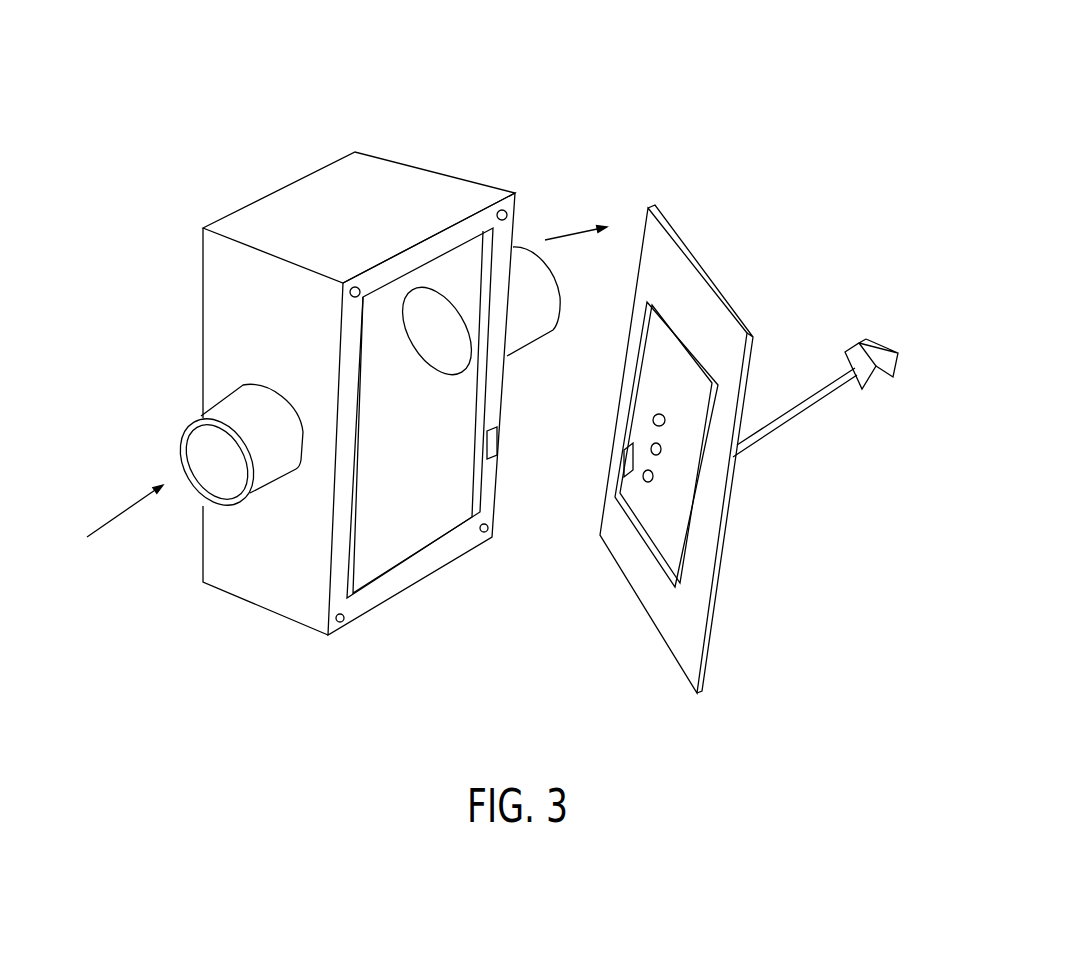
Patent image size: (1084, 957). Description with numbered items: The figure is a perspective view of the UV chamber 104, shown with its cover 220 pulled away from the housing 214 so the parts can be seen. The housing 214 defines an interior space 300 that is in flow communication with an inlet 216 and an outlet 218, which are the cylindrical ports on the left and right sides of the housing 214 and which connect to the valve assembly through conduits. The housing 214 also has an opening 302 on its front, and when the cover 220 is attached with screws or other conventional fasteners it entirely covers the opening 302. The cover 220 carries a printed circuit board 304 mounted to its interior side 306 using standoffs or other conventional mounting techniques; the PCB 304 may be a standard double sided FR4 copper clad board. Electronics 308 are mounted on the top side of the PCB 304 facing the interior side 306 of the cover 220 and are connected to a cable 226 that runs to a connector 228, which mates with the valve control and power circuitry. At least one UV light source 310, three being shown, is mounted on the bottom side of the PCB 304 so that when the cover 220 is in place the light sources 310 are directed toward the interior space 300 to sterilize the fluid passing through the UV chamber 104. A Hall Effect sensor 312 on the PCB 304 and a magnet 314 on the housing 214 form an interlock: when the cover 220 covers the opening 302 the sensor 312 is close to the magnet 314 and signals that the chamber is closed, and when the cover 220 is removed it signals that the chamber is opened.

The UV chamber 104 is at (552, 80).
The housing 214 is at (365, 170).
The inlet 216 is at (188, 432).
The outlet 218 is at (518, 247).
The cover 220 is at (679, 223).
The cable 226 is at (800, 414).
The connector 228 is at (878, 352).
The interior space 300 is at (383, 530).
The opening 302 is at (438, 540).
The printed circuit board 304 is at (688, 490).
The interior side 306 is at (668, 627).
The electronics 308 is at (671, 361).
The UV light source 310 is at (652, 417).
The Hall Effect sensor 312 is at (626, 462).
The magnet 314 is at (498, 443).